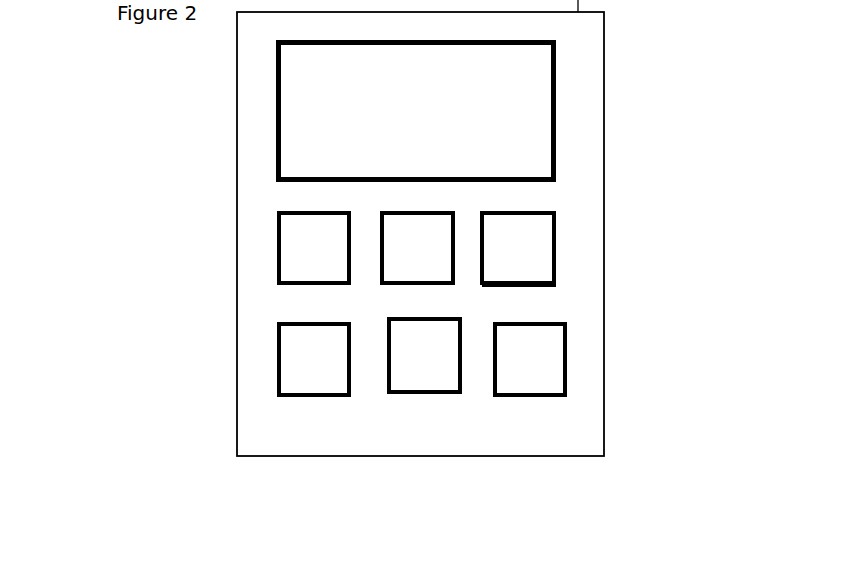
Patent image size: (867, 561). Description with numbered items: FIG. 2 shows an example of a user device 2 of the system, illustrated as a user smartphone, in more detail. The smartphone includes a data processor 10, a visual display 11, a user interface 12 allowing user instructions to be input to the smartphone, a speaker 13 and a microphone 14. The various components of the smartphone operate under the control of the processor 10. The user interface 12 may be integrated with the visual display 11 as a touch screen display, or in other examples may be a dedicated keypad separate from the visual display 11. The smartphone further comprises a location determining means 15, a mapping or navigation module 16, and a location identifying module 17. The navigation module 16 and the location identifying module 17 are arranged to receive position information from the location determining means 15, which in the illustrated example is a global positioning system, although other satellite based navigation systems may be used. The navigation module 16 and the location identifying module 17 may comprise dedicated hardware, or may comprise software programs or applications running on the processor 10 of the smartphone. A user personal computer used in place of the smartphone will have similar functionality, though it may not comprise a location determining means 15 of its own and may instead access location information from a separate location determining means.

The user device 2 is at (237, 124).
The visual display 11 is at (422, 91).
The speaker 13 is at (295, 248).
The data processor 10 is at (405, 248).
The navigation module 16 is at (539, 248).
The user interface 12 is at (540, 292).
The location determining means 15 is at (312, 351).
The microphone 14 is at (423, 369).
The location identifying module 17 is at (540, 369).